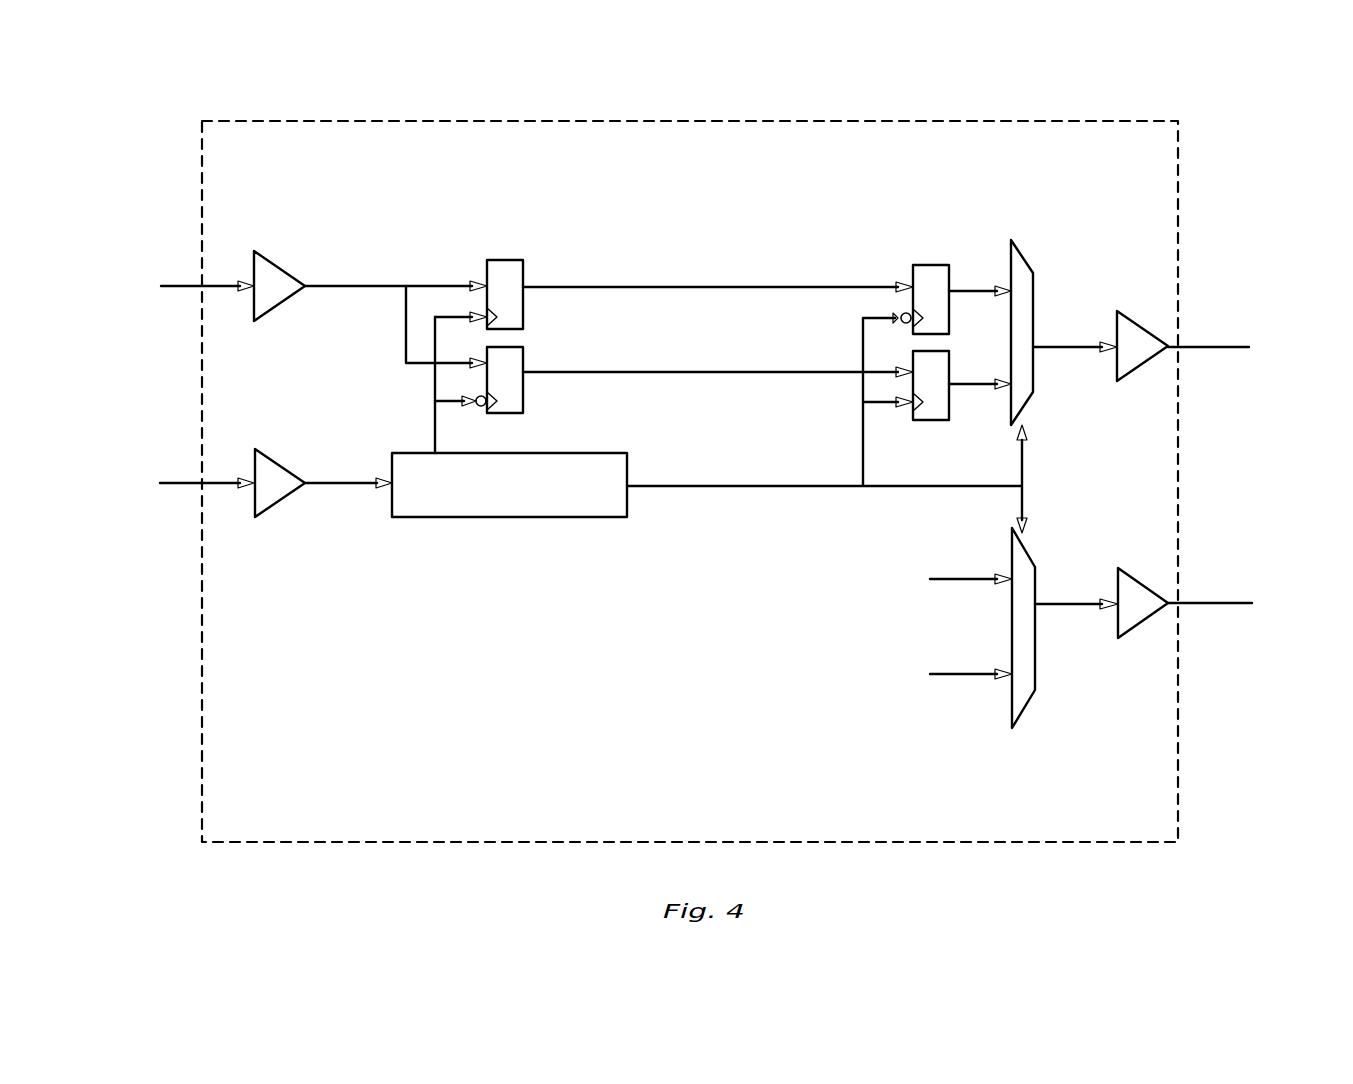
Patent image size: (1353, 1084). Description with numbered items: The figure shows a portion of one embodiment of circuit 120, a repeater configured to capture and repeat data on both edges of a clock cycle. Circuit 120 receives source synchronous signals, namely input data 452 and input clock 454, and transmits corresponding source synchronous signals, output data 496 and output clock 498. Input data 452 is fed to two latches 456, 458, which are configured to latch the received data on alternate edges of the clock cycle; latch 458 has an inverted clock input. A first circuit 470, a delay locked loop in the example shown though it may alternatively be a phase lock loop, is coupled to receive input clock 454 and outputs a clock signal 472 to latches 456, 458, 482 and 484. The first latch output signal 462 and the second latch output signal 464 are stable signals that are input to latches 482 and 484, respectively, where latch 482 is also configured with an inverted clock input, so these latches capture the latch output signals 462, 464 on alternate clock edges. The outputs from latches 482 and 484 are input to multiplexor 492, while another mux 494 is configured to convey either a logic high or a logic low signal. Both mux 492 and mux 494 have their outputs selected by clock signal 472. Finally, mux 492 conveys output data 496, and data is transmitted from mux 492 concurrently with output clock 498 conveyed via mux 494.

The circuit 120 is at (281, 821).
The input data 452 is at (178, 286).
The input clock 454 is at (178, 483).
The latch 456 is at (510, 260).
The latch 458 is at (517, 400).
The FFA 462 is at (690, 287).
The FFB 464 is at (690, 372).
The first circuit 470 is at (508, 517).
The clock signal 472 is at (435, 423).
The latch 482 is at (928, 265).
The latch 484 is at (937, 420).
The multiplexor 492 is at (1030, 272).
The mux 494 is at (1025, 707).
The output data 496 is at (1207, 347).
The output clock 498 is at (1207, 603).